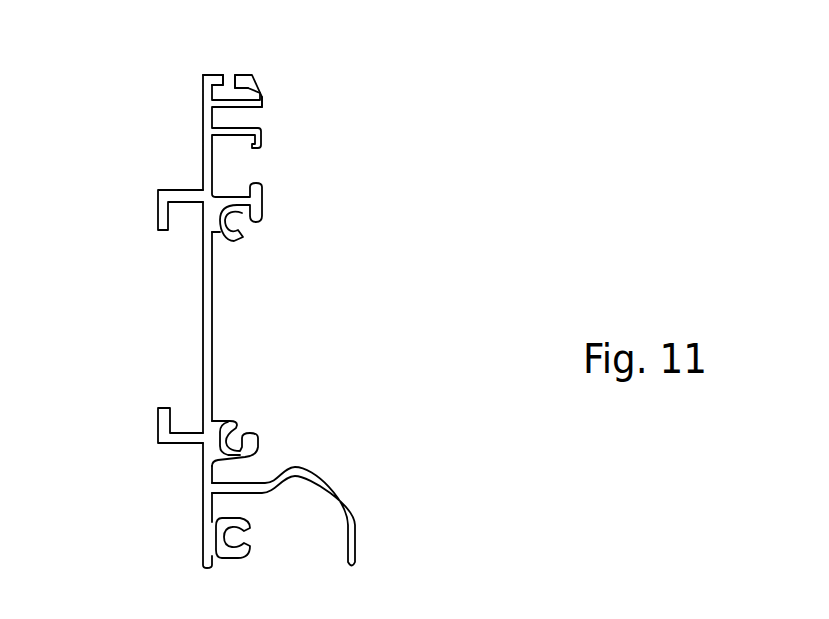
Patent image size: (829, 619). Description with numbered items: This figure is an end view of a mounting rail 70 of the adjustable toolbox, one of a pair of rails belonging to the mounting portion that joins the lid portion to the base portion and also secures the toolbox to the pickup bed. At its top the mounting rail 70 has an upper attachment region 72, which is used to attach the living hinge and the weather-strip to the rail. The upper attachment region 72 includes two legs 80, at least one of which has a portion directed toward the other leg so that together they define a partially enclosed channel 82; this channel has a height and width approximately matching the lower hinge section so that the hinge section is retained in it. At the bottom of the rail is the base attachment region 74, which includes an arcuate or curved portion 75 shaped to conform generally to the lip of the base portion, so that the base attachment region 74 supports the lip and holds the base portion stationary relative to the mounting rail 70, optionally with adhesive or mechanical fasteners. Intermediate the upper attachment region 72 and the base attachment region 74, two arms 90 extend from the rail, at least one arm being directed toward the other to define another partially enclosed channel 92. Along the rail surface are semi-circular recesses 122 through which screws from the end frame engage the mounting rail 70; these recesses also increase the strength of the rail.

The mounting rail 70 is at (364, 222).
The upper attachment region 72 is at (205, 163).
The base attachment region 74 is at (203, 519).
The arcuate or curved portion 75 is at (335, 498).
The legs 80 is at (252, 82).
The partially enclosed channel 82 is at (228, 72).
The arms 90 is at (158, 430).
The partially enclosed channel 92 is at (180, 355).
The semi-circular recesses 122 is at (265, 540).